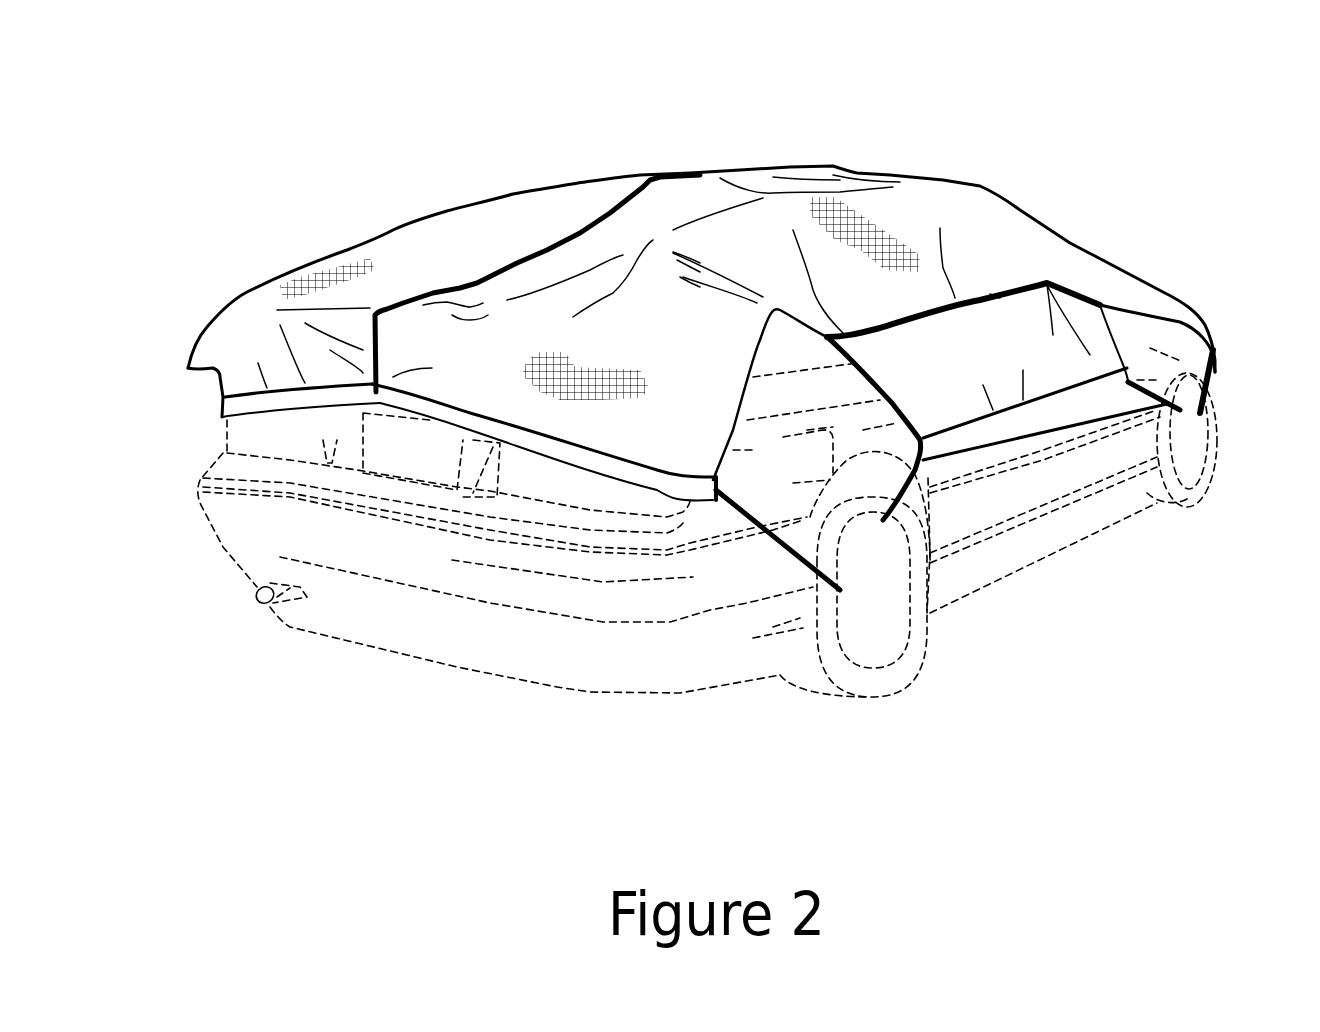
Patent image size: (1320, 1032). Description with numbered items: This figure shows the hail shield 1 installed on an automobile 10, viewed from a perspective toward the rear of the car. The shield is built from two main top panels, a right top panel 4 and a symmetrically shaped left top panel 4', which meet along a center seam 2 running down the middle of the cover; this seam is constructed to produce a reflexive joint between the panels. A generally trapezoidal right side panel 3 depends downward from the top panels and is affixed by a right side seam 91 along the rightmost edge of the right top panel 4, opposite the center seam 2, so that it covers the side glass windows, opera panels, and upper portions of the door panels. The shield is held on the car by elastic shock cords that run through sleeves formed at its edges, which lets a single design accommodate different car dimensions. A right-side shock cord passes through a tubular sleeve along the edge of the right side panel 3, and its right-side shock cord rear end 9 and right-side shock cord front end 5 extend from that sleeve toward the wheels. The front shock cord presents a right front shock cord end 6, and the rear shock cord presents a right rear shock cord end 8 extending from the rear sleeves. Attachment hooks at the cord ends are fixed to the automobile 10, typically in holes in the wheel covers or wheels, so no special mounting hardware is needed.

The hail shield 1 is at (493, 114).
The center seam 2 is at (511, 258).
The right side panel 3 is at (1047, 283).
The right top panel 4 is at (831, 265).
The left top panel 4' is at (321, 262).
The right-side shock cord front end 5 is at (1153, 383).
The right front shock cord end 6 is at (1217, 368).
The right rear shock cord end 8 is at (777, 540).
The right-side shock cord rear end 9 is at (913, 473).
The right side seam 91 is at (993, 294).
The automobile 10 is at (1020, 497).